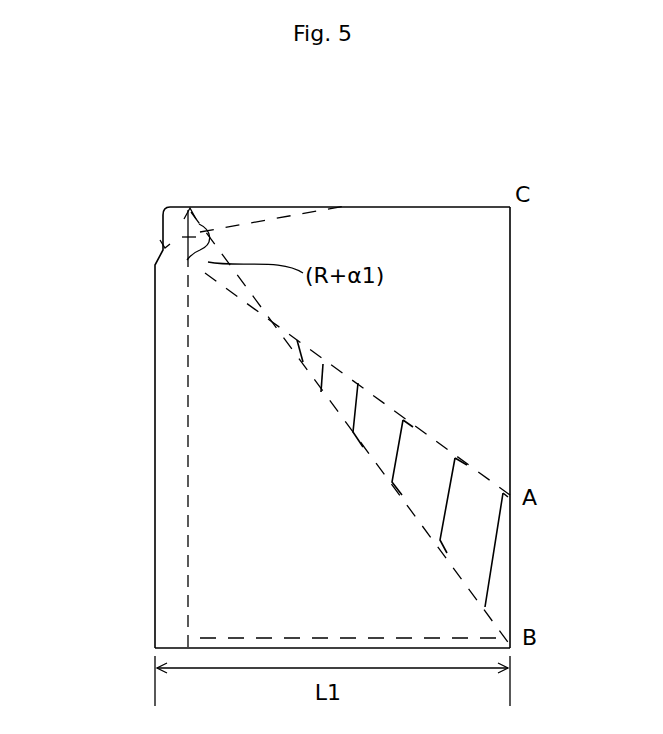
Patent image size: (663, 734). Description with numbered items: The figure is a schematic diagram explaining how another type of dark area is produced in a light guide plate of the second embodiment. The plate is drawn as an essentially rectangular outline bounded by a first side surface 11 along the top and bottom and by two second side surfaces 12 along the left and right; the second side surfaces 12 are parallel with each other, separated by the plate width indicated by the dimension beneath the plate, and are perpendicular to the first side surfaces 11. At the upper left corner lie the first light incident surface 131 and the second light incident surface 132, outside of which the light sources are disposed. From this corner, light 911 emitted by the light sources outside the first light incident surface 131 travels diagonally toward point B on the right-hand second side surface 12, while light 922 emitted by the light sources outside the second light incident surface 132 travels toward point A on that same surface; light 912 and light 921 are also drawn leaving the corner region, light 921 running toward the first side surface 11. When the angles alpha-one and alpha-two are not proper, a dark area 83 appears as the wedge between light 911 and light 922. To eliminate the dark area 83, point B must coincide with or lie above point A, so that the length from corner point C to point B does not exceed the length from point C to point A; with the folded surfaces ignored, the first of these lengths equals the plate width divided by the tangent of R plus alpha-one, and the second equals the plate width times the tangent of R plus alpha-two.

The first side surface 11 is at (372, 206).
The second side surface 12 is at (512, 322).
The dark area 83 is at (432, 468).
The first light incident surface 131 is at (200, 207).
The second light incident surface 132 is at (157, 258).
The light 911 is at (343, 418).
The light 912 is at (160, 233).
The light 921 is at (277, 217).
The light 922 is at (358, 382).